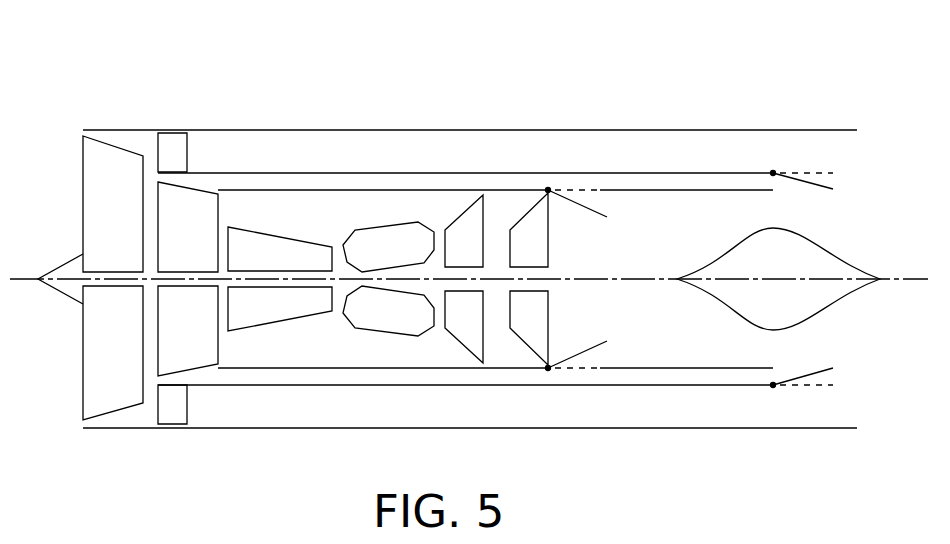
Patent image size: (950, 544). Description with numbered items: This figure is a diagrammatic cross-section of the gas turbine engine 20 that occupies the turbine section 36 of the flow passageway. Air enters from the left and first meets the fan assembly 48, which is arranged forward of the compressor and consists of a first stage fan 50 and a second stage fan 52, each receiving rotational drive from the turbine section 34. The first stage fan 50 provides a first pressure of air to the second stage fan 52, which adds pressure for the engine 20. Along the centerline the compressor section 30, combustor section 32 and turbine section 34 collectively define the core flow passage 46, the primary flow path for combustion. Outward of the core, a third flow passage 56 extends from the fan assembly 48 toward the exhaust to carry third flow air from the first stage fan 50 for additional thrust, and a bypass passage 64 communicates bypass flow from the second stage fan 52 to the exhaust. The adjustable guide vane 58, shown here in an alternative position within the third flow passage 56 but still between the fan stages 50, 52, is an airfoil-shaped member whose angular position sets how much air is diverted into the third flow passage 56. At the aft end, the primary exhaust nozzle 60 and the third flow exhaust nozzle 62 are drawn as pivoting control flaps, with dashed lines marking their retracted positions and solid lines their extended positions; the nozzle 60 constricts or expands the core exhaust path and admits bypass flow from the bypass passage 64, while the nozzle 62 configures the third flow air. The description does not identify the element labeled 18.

The exhaust section center body 18 is at (794, 209).
The gas turbine engine 20 is at (470, 225).
The compressor section 30 is at (280, 354).
The combustor section 32 is at (377, 383).
The turbine section 34 is at (496, 333).
The turbine section 36 is at (51, 370).
The core flow passage 46 is at (388, 177).
The fan assembly 48 is at (75, 262).
The first stage fan 50 is at (113, 242).
The second stage fan 52 is at (130, 279).
The third flow passage 56 is at (465, 219).
The adjustable guide vane 58 is at (190, 286).
The primary exhaust nozzle 60 is at (577, 279).
The third flow exhaust nozzle 62 is at (826, 279).
The bypass passage 64 is at (495, 225).